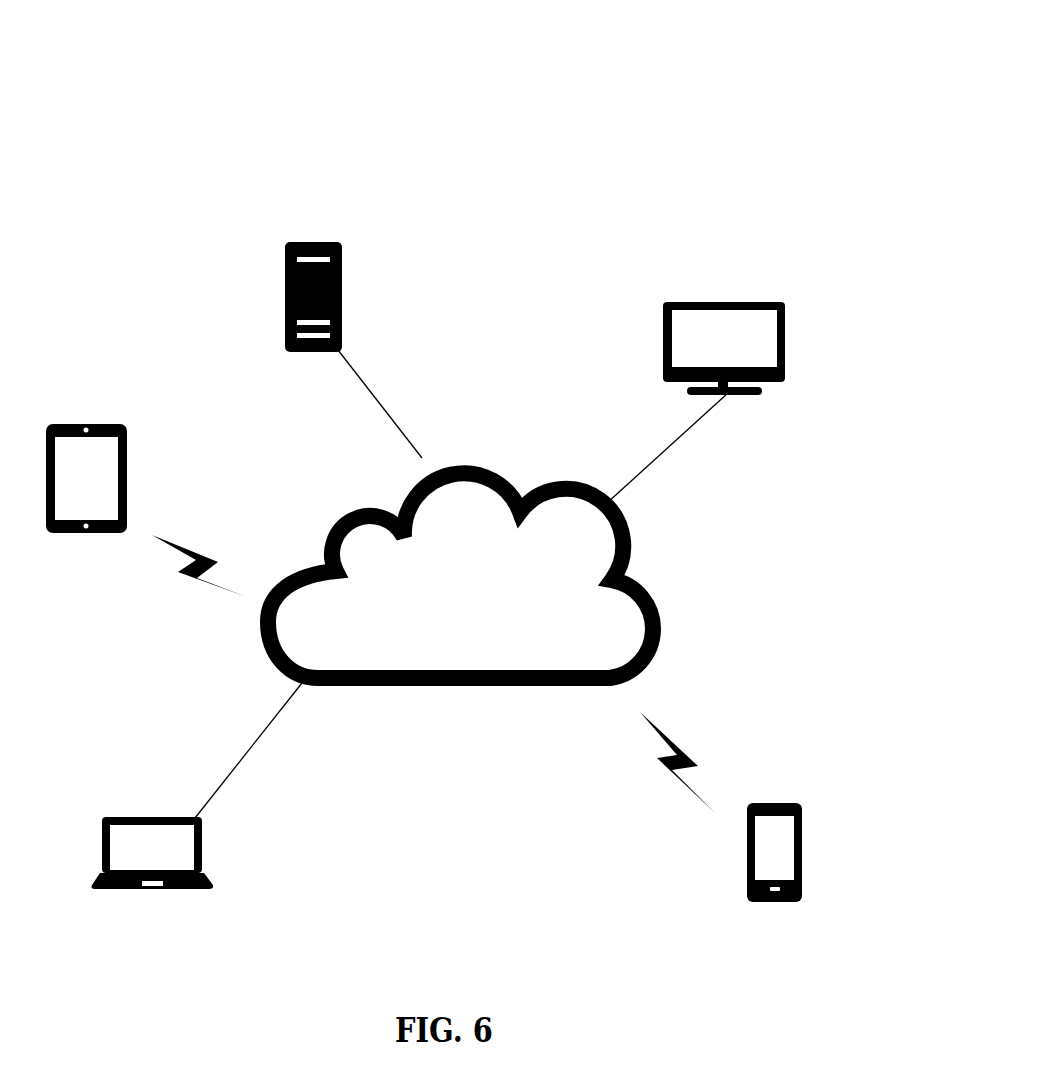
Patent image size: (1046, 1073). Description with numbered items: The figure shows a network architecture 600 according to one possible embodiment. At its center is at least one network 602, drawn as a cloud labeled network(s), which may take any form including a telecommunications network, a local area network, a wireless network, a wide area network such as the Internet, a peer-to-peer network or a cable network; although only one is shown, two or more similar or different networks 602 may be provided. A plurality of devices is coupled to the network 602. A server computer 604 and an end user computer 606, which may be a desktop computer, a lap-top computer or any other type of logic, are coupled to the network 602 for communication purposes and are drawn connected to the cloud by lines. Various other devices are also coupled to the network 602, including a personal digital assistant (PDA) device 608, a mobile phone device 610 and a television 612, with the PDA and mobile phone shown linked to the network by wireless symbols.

The network architecture 600 is at (92, 123).
The network 602 is at (471, 686).
The server computer 604 is at (313, 242).
The end user computer 606 is at (148, 817).
The personal digital assistant (PDA) device 608 is at (88, 424).
The mobile phone device 610 is at (765, 803).
The television 612 is at (728, 302).